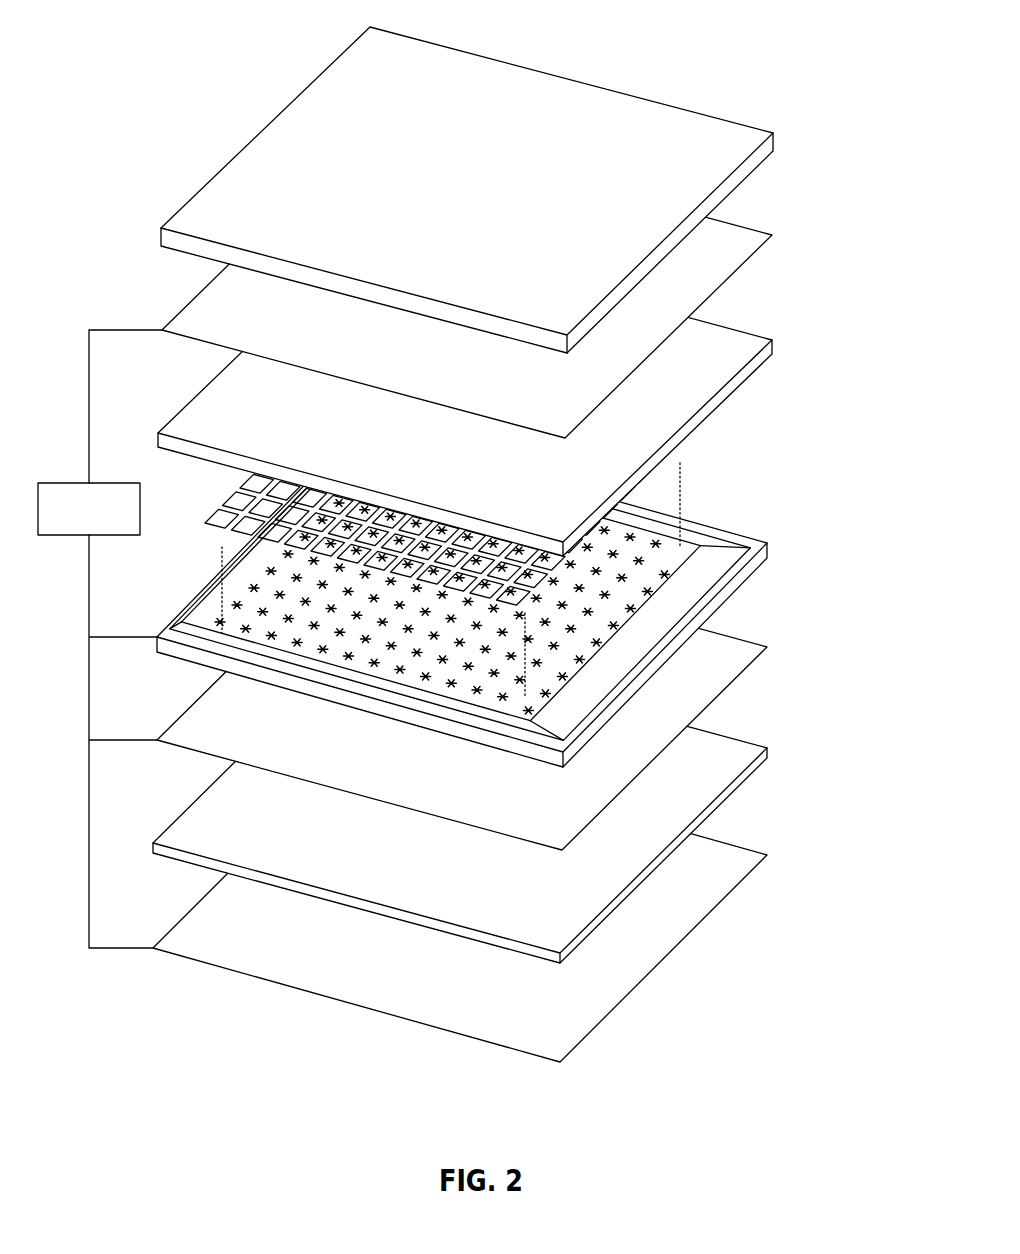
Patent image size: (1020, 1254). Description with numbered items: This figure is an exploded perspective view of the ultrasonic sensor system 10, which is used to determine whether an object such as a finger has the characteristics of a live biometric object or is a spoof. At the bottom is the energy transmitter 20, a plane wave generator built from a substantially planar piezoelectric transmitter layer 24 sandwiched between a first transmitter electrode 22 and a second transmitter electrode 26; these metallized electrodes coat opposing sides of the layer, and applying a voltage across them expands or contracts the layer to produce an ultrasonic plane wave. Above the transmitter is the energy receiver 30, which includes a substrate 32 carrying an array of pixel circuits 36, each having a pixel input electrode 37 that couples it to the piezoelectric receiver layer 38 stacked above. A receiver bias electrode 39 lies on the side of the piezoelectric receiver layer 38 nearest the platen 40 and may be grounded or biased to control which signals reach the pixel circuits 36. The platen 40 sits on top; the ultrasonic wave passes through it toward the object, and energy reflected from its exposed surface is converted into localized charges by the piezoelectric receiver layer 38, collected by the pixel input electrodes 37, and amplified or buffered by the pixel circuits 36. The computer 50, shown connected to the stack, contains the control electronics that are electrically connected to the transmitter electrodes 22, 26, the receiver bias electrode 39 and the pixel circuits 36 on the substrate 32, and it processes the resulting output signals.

The system 10 is at (454, 533).
The energy transmitter 20 is at (511, 799).
The first transmitter electrode 22 is at (734, 845).
The piezoelectric transmitter layer 24 is at (734, 740).
The second transmitter electrode 26 is at (469, 693).
The energy receiver 30 is at (513, 447).
The substrate 32 is at (737, 538).
The pixel circuits 36 is at (686, 541).
The pixel input electrode 37 is at (686, 440).
The piezoelectric receiver layer 38 is at (740, 330).
The receiver bias electrode 39 is at (474, 282).
The platen 40 is at (734, 56).
The computer 50 is at (100, 639).